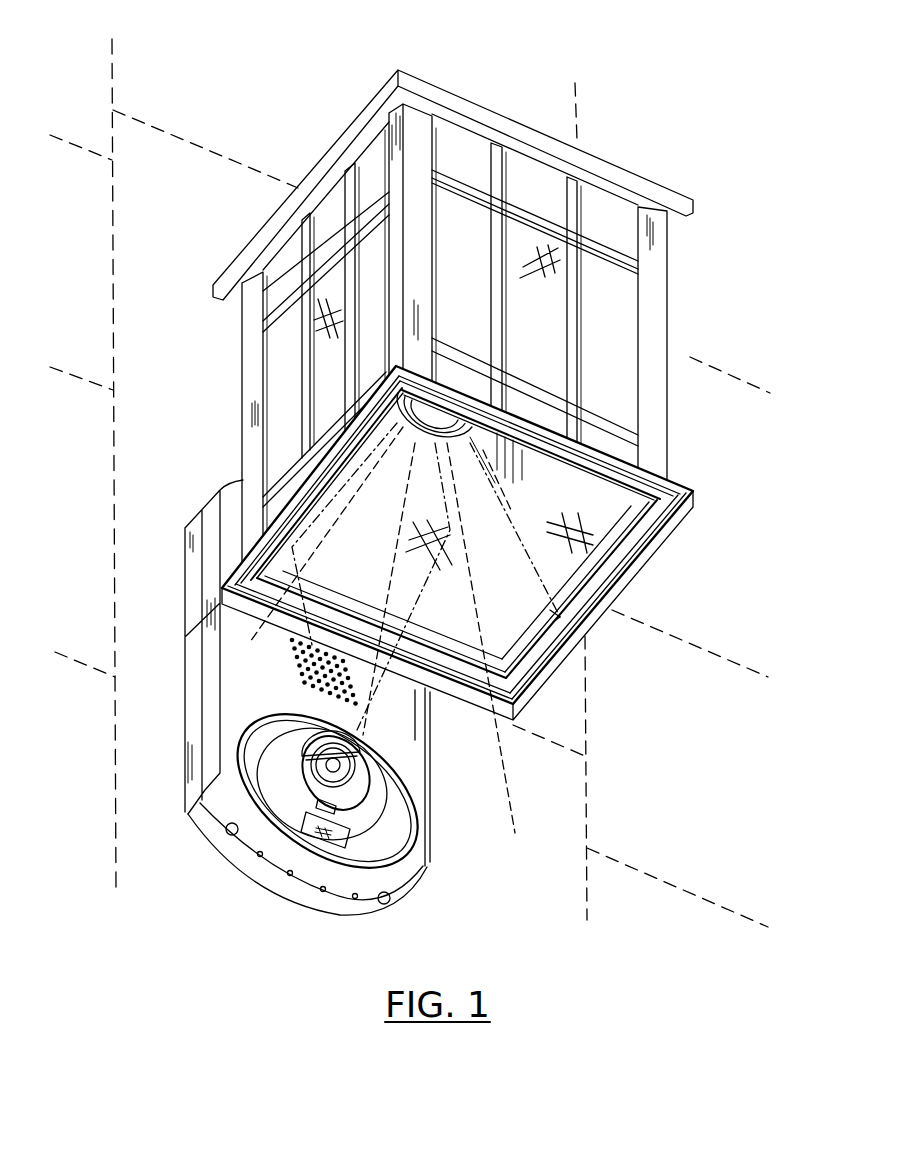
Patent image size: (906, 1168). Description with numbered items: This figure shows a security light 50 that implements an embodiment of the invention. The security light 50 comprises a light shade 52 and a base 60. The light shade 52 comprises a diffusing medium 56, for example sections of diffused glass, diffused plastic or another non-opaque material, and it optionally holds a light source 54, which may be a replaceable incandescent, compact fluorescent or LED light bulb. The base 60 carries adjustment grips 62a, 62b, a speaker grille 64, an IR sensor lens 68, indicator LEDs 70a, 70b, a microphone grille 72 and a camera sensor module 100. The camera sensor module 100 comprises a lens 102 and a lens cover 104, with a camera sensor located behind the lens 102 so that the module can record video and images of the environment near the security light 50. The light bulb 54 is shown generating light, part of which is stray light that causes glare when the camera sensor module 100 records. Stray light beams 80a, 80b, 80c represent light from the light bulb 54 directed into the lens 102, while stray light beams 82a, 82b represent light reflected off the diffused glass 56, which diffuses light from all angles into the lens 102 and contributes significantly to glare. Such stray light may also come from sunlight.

The security light 50 is at (382, 28).
The light shade 52 is at (452, 338).
The light source 54 is at (403, 437).
The diffusing medium 56 is at (277, 377).
The base 60 is at (184, 628).
The adjustment grip 62a is at (302, 731).
The adjustment grip 62b is at (292, 790).
The speaker grille 64 is at (283, 657).
The IR sensor lens 68 is at (362, 843).
The indicator LED 70a is at (227, 831).
The indicator LED 70b is at (387, 903).
The microphone grille 72 is at (291, 876).
The stray light beam 80a is at (346, 525).
The stray light beam 80b is at (381, 589).
The stray light beam 80c is at (511, 822).
The reflected stray light beam 82a is at (297, 582).
The reflected stray light beam 82b is at (537, 633).
The camera sensor module 100 is at (308, 783).
The lens 102 is at (368, 775).
The lens cover 104 is at (305, 748).